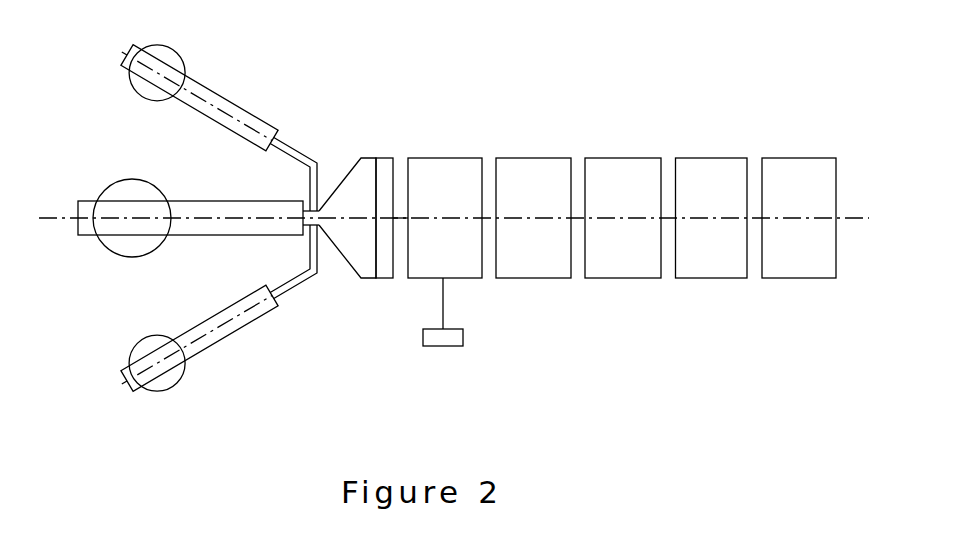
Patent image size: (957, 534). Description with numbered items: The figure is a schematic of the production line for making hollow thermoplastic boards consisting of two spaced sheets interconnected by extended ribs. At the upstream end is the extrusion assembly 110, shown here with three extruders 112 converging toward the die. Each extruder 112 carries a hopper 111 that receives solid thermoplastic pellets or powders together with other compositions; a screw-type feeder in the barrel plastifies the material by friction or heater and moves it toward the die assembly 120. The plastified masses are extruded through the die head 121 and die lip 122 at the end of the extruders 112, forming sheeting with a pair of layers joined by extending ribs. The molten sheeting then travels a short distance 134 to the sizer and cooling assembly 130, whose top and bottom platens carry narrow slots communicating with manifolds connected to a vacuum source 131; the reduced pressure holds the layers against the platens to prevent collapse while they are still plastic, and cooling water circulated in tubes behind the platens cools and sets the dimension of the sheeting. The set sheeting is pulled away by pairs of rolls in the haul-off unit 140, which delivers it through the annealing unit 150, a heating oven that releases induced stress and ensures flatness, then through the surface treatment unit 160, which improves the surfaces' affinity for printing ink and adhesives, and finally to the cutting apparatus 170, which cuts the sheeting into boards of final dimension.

The extrusion assembly 110 is at (255, 155).
The hoppers 111 is at (122, 93).
The extruders 112 is at (212, 69).
The die assembly 120 is at (350, 210).
The die head 121 is at (347, 218).
The die lip 122 is at (363, 278).
The short distance 134 is at (393, 142).
The sizer and cooling assembly 130 is at (445, 218).
The vacuum source 131 is at (443, 326).
The haul-off unit 140 is at (533, 218).
The annealing unit 150 is at (623, 218).
The surface treatment unit 160 is at (712, 218).
The cutting apparatus 170 is at (799, 218).